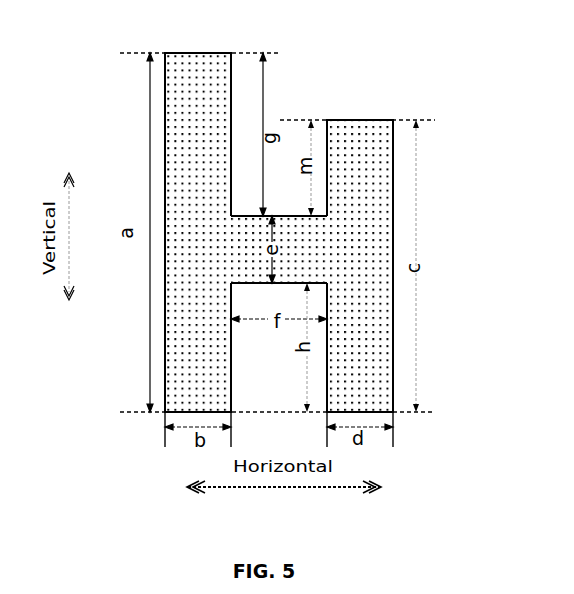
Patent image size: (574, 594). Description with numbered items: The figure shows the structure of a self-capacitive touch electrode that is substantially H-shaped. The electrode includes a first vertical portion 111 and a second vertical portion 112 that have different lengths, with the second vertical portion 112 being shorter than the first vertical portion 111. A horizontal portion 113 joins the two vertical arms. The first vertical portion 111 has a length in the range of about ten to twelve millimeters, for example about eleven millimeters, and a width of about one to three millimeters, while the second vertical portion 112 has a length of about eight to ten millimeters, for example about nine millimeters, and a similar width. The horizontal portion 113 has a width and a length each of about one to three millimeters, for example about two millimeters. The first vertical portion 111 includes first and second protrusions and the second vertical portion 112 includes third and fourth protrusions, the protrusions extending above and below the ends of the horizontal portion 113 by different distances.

The first vertical portion 111 is at (197, 70).
The second vertical portion 112 is at (357, 133).
The horizontal portion 113 is at (257, 232).